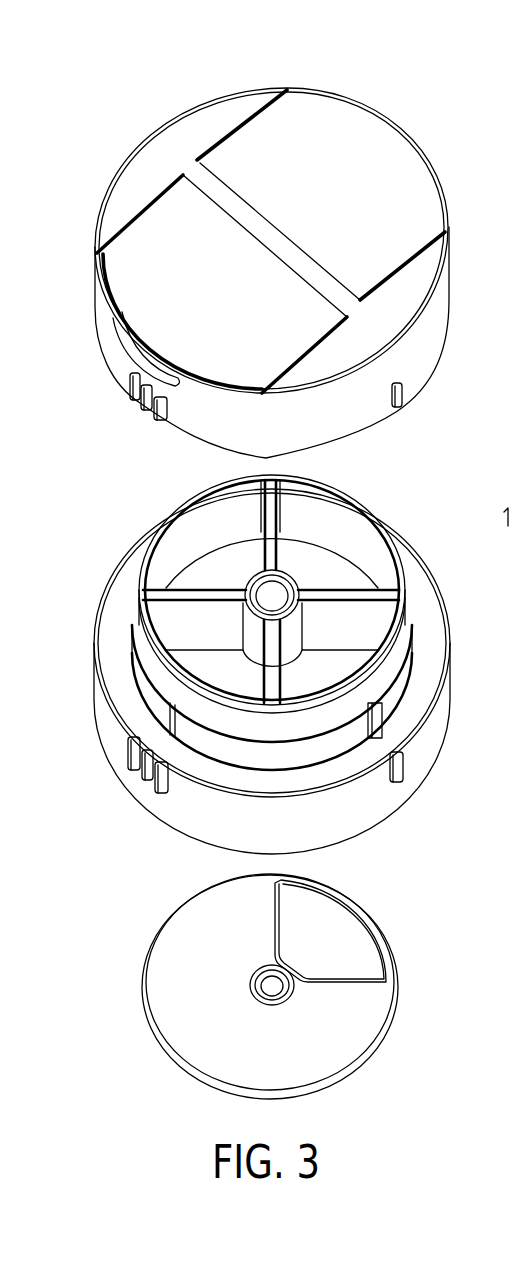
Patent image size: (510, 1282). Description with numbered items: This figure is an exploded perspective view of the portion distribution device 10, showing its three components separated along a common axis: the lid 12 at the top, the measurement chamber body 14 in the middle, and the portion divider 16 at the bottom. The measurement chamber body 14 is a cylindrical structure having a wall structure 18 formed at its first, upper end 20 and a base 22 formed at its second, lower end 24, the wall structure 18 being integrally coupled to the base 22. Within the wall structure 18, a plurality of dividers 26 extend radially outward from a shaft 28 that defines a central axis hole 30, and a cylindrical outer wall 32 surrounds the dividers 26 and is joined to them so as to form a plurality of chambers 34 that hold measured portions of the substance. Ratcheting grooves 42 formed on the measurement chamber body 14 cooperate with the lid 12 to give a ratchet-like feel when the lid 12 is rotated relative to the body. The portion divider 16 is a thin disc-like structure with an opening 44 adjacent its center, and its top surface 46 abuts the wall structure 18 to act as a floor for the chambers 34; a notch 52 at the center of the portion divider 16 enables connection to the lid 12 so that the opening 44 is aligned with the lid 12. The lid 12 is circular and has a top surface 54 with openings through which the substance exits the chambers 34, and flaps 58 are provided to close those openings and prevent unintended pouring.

The portion distribution device 10 is at (152, 42).
The lid 12 is at (118, 129).
The measurement chamber body 14 is at (113, 548).
The portion divider 16 is at (150, 903).
The wall structure 18 is at (392, 506).
The first (upper) end 20 is at (158, 468).
The base 22 is at (110, 782).
The second (lower) end 24 is at (408, 840).
The dividers 26 is at (268, 512).
The shaft 28 is at (293, 632).
The central axis hole 30 is at (278, 590).
The cylindrical outer wall 32 is at (300, 497).
The chambers 34 is at (376, 559).
The ratcheting grooves 42 is at (205, 745).
The opening 44 is at (350, 950).
The top surface 46 is at (259, 1064).
The notch 52 is at (262, 975).
The top surface 54 is at (218, 122).
The flaps 58 is at (305, 110).